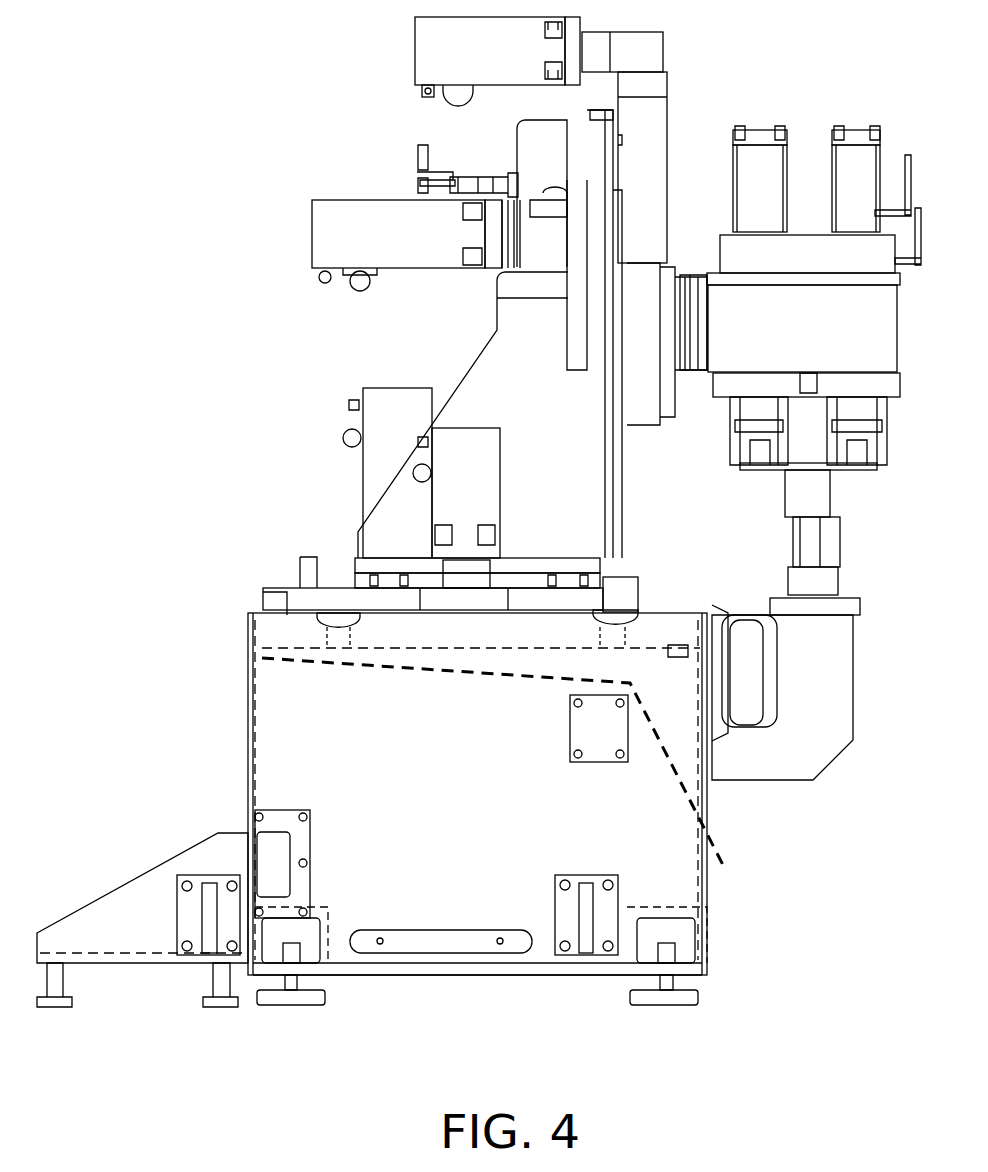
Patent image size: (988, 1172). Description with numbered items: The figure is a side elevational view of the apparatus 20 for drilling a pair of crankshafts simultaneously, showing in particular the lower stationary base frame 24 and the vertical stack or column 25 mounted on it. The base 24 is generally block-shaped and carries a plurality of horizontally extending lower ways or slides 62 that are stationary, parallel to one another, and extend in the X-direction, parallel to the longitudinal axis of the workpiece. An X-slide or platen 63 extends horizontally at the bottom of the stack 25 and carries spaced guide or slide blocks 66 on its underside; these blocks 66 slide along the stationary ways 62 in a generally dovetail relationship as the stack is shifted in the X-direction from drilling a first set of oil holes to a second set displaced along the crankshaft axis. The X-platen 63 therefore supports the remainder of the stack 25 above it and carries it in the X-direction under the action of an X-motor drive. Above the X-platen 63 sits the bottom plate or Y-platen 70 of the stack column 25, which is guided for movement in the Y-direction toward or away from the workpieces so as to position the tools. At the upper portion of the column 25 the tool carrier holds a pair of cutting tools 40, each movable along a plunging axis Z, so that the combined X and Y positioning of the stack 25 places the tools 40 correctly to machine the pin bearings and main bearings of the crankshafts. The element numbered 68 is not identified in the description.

The apparatus 20 is at (300, 424).
The base or lower stationary frame 24 is at (305, 777).
The vertical stack or column 25 is at (430, 342).
The tools 40 is at (760, 477).
The lower ways or slides 62 is at (340, 627).
The X-slide or platen 63 is at (610, 600).
The guide or slide blocks 66 is at (330, 612).
The mounting block 68 is at (575, 493).
The bottom plate or Y-platen 70 is at (348, 580).